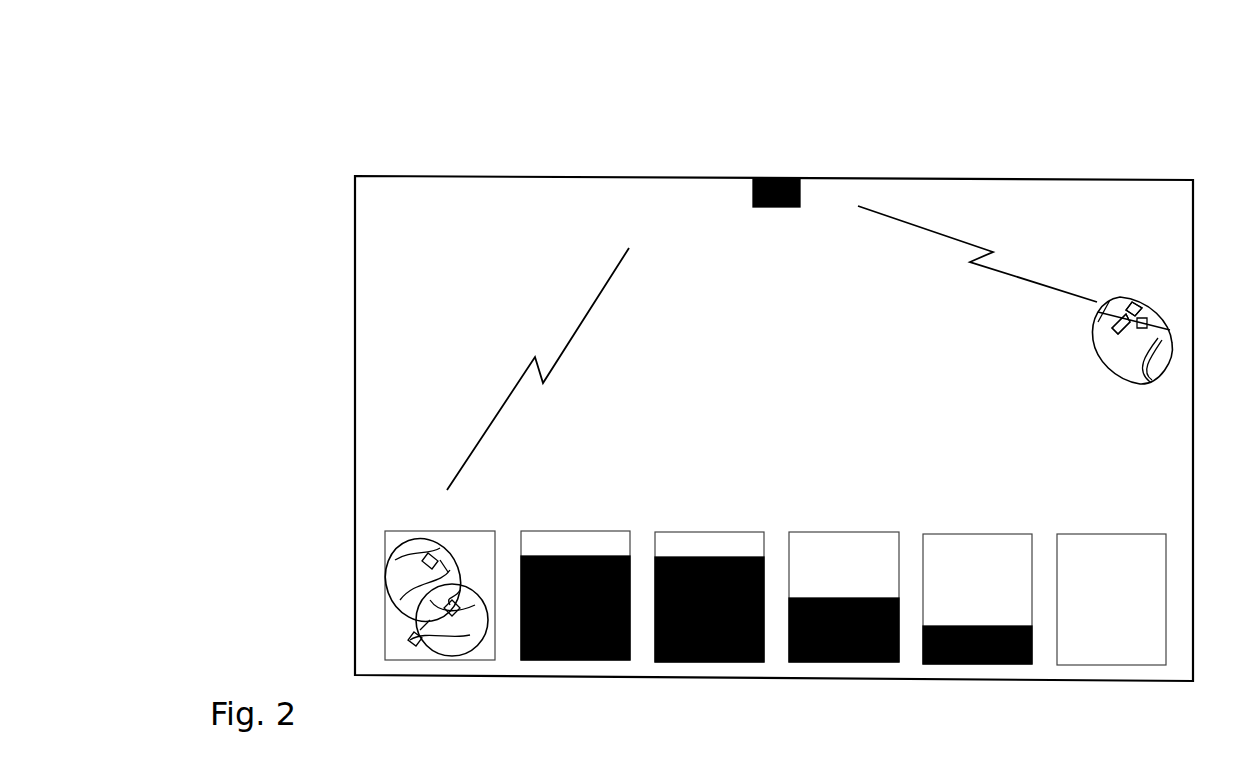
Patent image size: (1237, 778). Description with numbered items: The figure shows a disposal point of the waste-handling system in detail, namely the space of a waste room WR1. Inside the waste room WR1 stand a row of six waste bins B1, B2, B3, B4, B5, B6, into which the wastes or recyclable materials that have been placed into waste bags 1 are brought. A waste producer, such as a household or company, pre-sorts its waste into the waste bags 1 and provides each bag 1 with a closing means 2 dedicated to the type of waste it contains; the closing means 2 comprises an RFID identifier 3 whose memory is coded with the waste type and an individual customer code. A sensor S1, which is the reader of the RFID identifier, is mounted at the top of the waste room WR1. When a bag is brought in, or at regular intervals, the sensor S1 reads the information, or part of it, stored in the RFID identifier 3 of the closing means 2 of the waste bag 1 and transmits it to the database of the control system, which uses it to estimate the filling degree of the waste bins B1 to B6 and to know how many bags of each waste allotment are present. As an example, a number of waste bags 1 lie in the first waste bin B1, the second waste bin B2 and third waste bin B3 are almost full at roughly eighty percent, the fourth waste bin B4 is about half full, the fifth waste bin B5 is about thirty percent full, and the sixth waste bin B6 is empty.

The waste room WR1 is at (400, 212).
The sensor S1 is at (768, 179).
The first waste bin B1 is at (402, 532).
The second waste bin B2 is at (553, 557).
The third waste bin B3 is at (682, 557).
The fourth waste bin B4 is at (830, 558).
The fifth waste bin B5 is at (957, 560).
The sixth waste bin B6 is at (1093, 560).
The waste bag 1 is at (407, 560).
The closing means 2 is at (1115, 322).
The RFID identifier 3 is at (1147, 307).